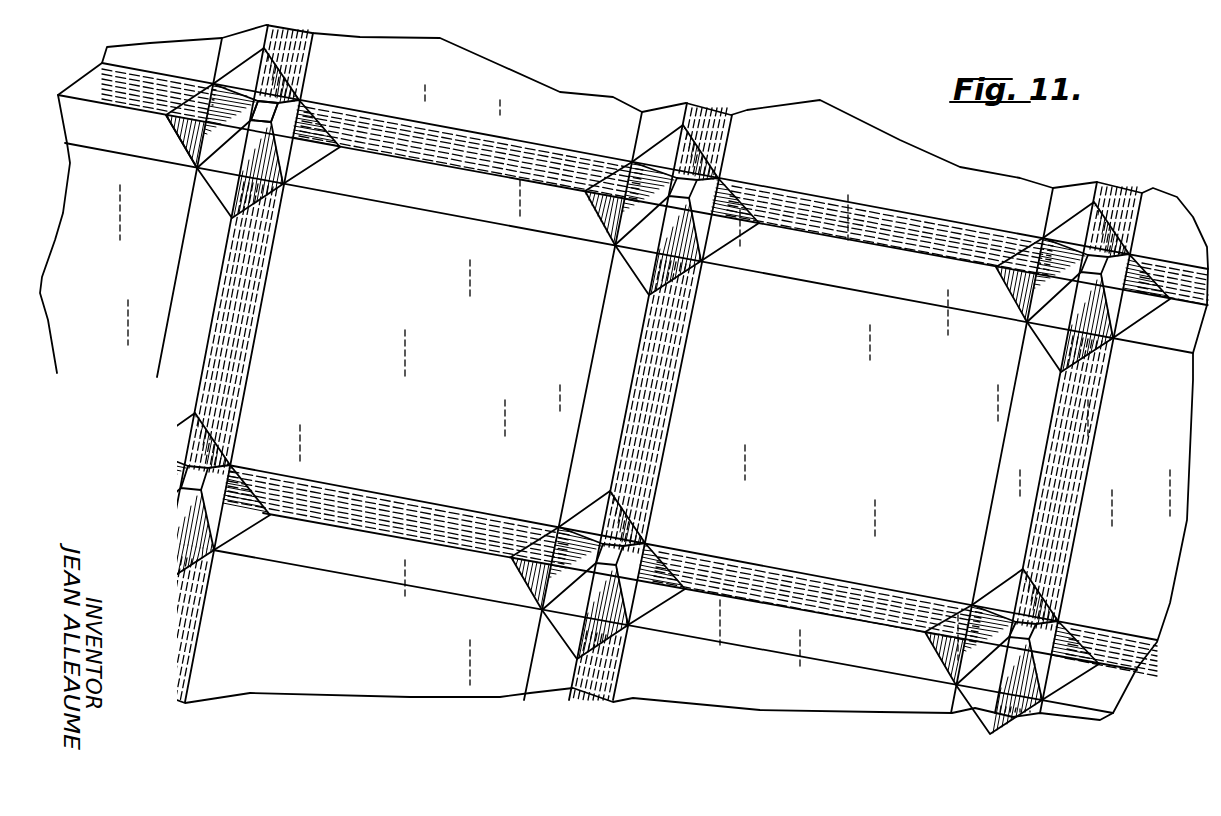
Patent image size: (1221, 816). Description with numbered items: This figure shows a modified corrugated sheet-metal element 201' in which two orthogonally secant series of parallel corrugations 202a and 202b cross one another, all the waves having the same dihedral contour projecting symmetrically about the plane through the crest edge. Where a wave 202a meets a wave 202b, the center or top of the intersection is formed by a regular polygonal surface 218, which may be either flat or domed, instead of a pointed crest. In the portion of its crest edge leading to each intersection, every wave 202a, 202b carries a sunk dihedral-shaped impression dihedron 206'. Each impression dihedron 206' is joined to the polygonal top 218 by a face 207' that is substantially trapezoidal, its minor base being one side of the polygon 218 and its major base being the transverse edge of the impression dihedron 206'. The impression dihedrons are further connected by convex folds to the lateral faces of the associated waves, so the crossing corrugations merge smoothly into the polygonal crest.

The sheet-metal element 201' is at (624, 372).
The corrugation of first series 202a is at (248, 320).
The corrugation of second series 202b is at (424, 187).
The impression dihedron 206' is at (633, 391).
The trapezoidal connecting face 207' is at (164, 158).
The regular polygonal surface 218 is at (273, 100).